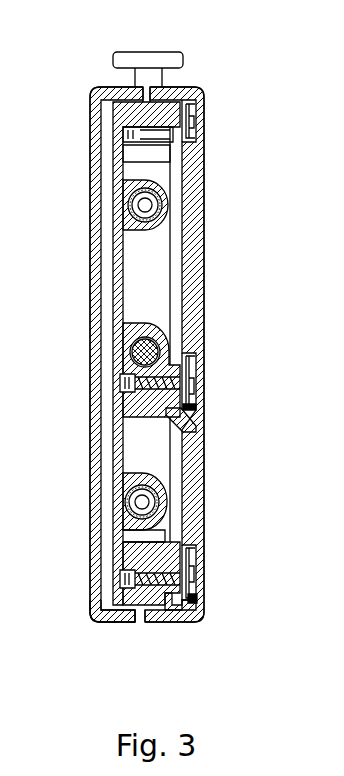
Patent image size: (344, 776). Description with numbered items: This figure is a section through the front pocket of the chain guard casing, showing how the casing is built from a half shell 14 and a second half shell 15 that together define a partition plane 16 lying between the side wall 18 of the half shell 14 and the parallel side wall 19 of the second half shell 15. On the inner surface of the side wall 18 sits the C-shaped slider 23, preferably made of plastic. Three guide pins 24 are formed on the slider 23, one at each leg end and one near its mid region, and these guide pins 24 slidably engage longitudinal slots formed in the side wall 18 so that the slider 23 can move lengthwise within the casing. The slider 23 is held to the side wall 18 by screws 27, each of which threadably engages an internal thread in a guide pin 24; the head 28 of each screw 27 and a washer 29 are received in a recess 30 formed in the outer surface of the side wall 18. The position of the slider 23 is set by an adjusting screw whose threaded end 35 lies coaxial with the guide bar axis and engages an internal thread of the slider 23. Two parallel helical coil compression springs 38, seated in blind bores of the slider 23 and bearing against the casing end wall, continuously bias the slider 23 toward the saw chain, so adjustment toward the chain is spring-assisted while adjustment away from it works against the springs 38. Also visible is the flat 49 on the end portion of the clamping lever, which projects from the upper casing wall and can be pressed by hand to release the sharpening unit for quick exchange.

The half shell 14 is at (200, 523).
The second half shell 15 is at (92, 606).
The partition plane 16 is at (142, 618).
The side wall 18 is at (198, 240).
The side wall 19 is at (93, 457).
The slider 23 is at (120, 262).
The guide pin 24 is at (196, 427).
The screw 27 is at (122, 382).
The head 28 is at (196, 123).
The washer 29 is at (193, 107).
The recess 30 is at (196, 408).
The threaded end 35 is at (153, 346).
The helical coil compression spring 38 is at (155, 205).
The flat 49 is at (181, 61).